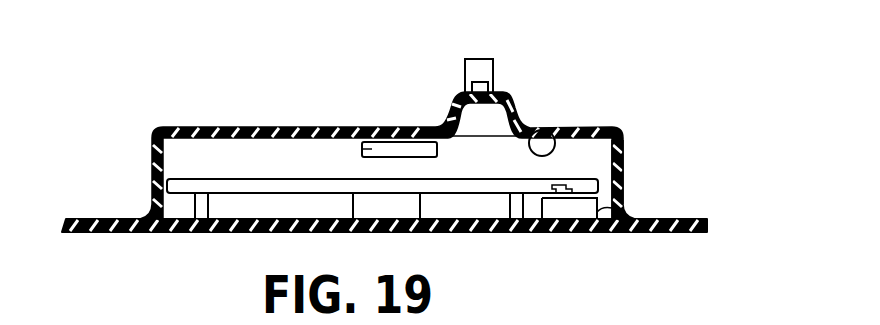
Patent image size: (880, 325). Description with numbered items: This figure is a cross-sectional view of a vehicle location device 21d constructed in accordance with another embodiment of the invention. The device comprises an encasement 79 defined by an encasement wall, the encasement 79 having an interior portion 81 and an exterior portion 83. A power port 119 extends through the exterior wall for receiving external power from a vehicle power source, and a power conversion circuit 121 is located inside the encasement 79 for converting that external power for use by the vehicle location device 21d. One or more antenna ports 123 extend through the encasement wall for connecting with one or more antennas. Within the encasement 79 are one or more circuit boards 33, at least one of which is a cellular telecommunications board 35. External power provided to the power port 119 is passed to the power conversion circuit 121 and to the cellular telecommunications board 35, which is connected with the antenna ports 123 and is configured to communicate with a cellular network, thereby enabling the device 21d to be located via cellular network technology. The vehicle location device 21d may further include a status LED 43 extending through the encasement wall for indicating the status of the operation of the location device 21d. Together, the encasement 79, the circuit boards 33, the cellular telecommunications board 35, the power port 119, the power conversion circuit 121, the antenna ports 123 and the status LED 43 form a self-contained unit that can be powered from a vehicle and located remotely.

The vehicle location device 21d is at (131, 109).
The circuit boards 33 is at (231, 186).
The cellular telecommunications board 35 is at (494, 185).
The status LED 43 is at (606, 209).
The encasement 79 is at (613, 128).
The interior portion 81 is at (531, 132).
The exterior portion 83 is at (625, 156).
The power port 119 is at (473, 87).
The power conversion circuit 121 is at (372, 144).
The antenna ports 123 is at (484, 68).